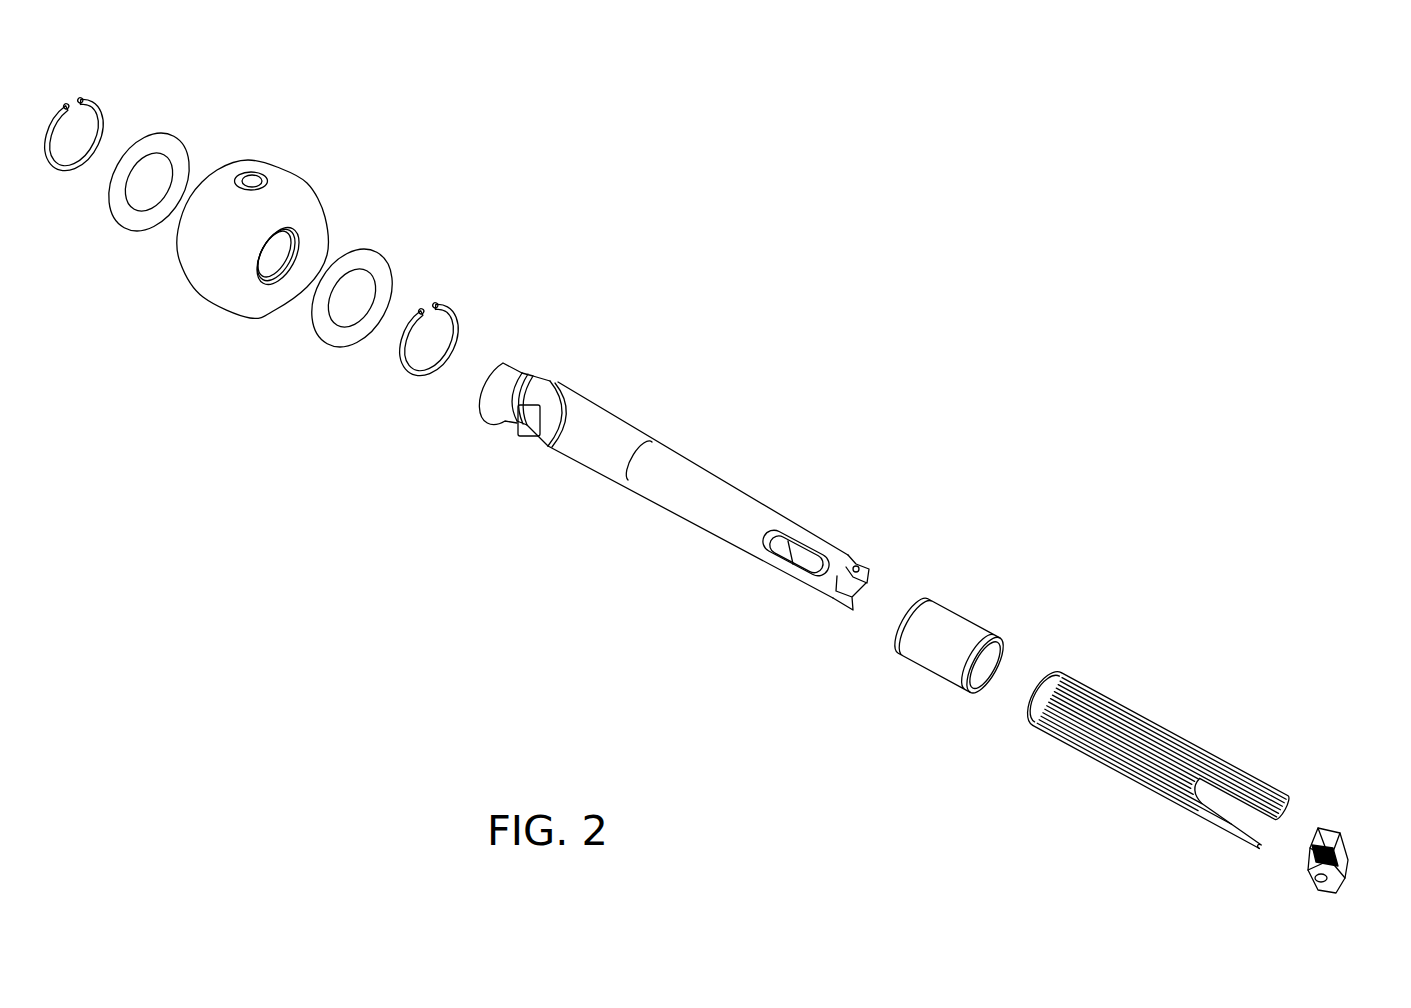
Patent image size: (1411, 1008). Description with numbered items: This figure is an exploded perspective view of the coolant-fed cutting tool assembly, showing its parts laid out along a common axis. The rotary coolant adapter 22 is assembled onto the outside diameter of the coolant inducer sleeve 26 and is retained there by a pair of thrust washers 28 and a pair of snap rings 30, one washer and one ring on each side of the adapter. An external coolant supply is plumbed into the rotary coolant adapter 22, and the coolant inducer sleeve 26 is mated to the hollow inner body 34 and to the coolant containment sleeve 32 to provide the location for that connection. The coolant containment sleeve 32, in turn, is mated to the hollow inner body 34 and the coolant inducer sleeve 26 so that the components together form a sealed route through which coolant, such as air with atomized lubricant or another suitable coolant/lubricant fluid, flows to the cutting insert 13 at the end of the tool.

The cutting insert 13 is at (1335, 815).
The rotary coolant adapter 22 is at (205, 317).
The coolant inducer sleeve 26 is at (973, 602).
The thrust washers 28 is at (179, 131).
The snap rings 30 is at (92, 100).
The coolant containment sleeve 32 is at (1157, 706).
The hollow inner body 34 is at (742, 471).